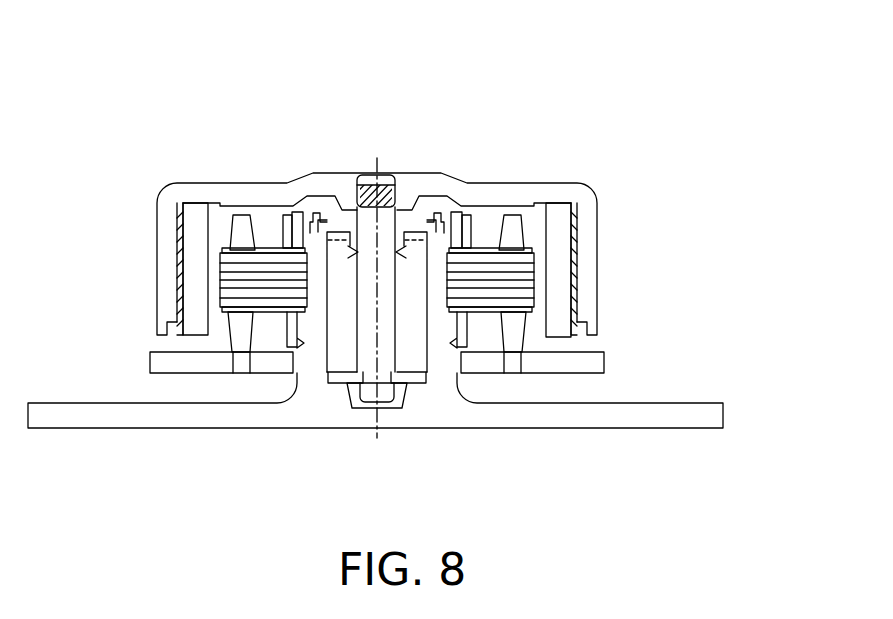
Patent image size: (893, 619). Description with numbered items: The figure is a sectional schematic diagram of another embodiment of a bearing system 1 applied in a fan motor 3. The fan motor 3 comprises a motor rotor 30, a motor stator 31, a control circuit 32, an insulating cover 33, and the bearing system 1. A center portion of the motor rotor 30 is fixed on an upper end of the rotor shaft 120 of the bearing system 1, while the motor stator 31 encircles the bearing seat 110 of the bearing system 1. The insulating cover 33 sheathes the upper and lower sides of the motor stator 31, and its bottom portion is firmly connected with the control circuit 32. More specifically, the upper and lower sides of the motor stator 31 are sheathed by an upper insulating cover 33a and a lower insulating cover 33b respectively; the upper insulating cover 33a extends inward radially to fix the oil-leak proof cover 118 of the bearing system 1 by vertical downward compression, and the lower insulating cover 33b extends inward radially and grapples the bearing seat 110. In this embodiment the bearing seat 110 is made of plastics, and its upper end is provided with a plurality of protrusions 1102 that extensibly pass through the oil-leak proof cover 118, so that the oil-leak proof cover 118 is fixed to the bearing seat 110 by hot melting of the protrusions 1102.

The bearing system 1 is at (333, 362).
The fan motor 3 is at (375, 112).
The motor rotor 30 is at (580, 205).
The motor stator 31 is at (243, 272).
The control circuit 32 is at (578, 362).
The insulating cover 33 is at (525, 234).
The upper insulating cover 33a is at (462, 237).
The lower insulating cover 33b is at (467, 310).
The bearing seat 110 is at (437, 412).
The oil-leak proof cover 118 is at (410, 222).
The rotor shaft 120 is at (365, 175).
The protrusions 1102 is at (317, 212).